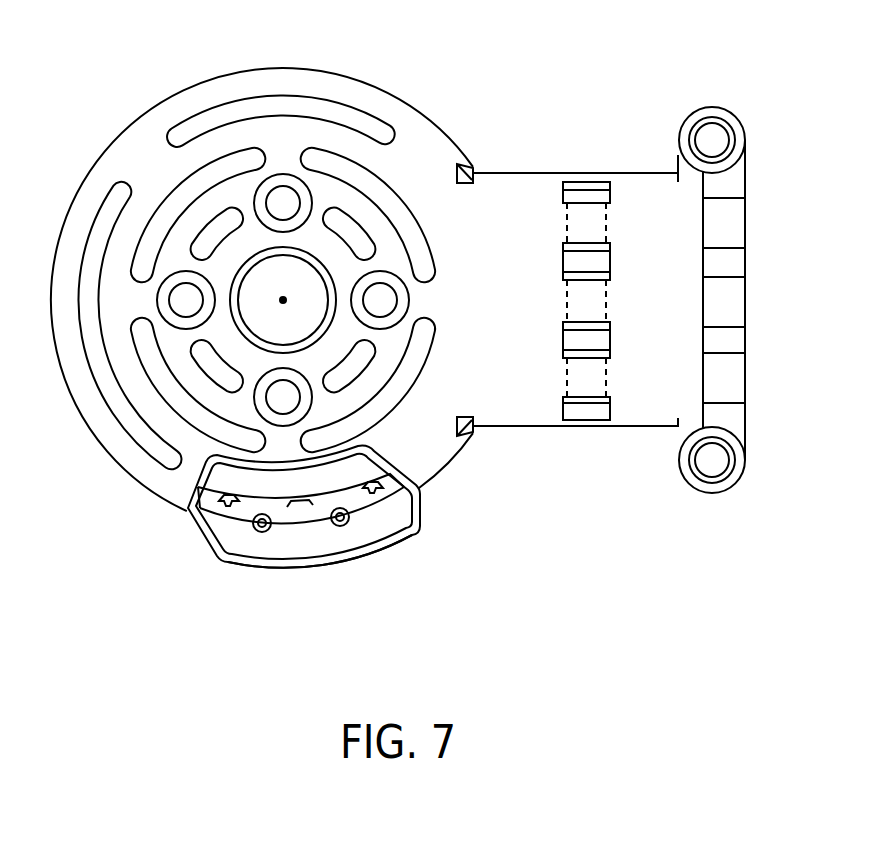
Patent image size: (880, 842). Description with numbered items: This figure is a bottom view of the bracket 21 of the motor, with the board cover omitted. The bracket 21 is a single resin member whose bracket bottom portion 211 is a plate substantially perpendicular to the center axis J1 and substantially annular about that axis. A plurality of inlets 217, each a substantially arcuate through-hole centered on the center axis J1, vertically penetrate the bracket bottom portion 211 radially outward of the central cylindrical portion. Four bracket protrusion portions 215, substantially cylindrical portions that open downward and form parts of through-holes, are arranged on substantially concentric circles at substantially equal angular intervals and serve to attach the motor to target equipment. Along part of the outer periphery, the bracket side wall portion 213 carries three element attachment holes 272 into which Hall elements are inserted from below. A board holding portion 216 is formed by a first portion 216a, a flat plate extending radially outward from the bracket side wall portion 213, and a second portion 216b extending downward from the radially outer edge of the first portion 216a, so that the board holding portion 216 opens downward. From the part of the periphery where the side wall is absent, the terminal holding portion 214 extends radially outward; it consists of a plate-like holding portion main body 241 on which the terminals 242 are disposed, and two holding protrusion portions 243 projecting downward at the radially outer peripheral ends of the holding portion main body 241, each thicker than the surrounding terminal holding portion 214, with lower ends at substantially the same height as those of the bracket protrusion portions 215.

The bracket 21 is at (78, 29).
The bracket bottom portion 211 is at (430, 145).
The bracket side wall portion 213 is at (208, 503).
The terminal holding portion 214 is at (577, 100).
The bracket protrusion portion 215 is at (283, 174).
The board holding portion 216 is at (307, 633).
The first portion 216a is at (308, 548).
The second portion 216b is at (257, 563).
The inlet 217 is at (205, 222).
The holding portion main body 241 is at (537, 190).
The terminal 242 is at (591, 198).
The holding protrusion portion 243 is at (700, 107).
The element attachment hole 272 is at (228, 509).
The center axis J1 is at (283, 300).